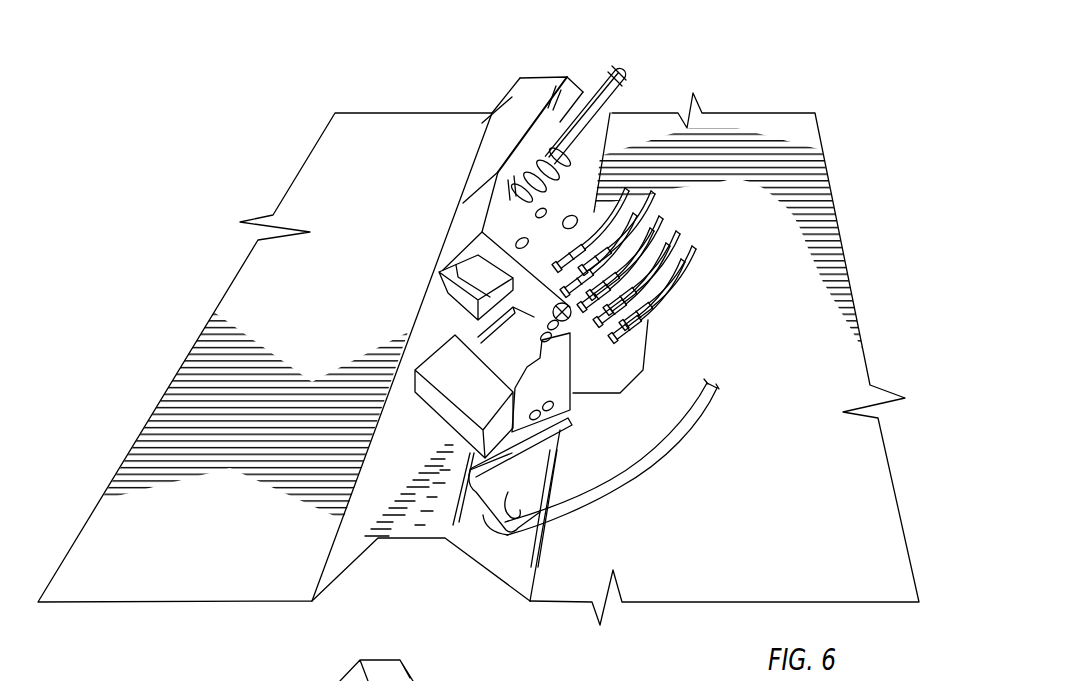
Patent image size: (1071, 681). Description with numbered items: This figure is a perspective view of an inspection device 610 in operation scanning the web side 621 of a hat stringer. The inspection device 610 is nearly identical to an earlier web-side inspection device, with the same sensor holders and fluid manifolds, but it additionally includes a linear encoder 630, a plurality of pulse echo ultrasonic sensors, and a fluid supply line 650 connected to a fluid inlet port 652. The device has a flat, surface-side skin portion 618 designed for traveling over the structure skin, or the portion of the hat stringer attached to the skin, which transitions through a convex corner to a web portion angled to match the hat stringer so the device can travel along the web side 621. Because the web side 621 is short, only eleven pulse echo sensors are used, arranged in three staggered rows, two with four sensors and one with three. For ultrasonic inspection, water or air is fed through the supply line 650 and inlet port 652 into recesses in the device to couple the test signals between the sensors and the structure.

The inspection device 610 is at (446, 195).
The fluid inlet port 652 is at (531, 143).
The web side 621 is at (578, 92).
The fluid supply line 650 is at (626, 83).
The skin portion 618 is at (599, 400).
The linear encoder 630 is at (517, 478).